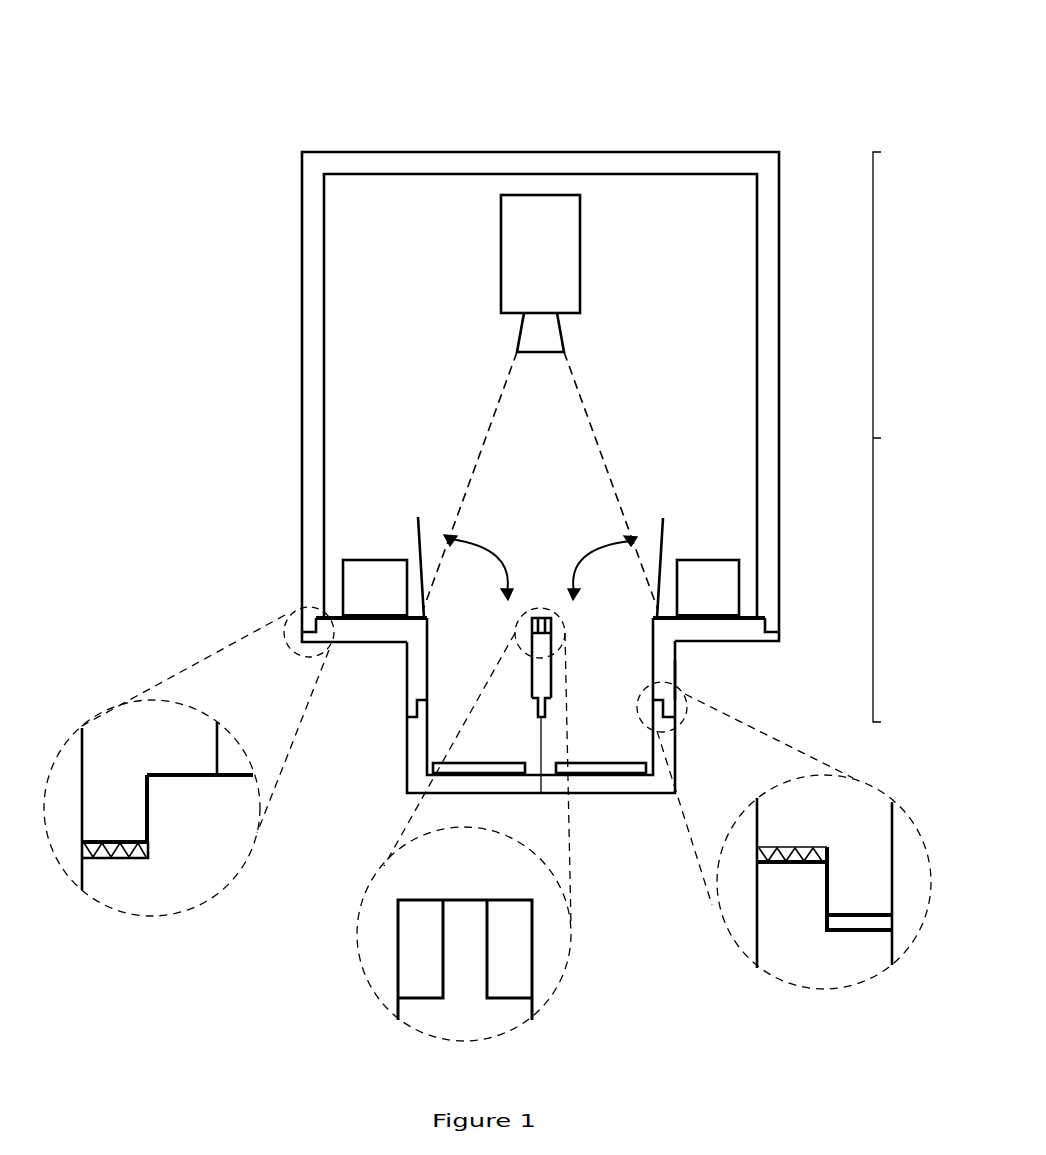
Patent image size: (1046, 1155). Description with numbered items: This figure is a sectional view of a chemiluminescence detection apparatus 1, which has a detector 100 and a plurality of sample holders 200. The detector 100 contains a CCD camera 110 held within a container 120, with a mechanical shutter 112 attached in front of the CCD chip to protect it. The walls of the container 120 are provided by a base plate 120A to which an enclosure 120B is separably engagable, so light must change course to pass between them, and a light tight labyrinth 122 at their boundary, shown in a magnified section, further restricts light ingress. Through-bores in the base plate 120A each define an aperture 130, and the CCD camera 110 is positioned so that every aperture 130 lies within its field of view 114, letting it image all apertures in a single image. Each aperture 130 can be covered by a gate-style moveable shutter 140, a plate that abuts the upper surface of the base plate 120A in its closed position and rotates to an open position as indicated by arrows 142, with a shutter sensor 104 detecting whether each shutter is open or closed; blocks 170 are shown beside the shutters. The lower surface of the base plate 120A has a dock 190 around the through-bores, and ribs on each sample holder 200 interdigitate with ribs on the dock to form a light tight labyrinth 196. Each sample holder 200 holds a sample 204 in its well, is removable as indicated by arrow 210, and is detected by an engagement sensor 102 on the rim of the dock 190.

The chemiluminescence detection apparatus 1 is at (253, 82).
The detector 100 is at (895, 437).
The engagement sensor 102 is at (892, 925).
The shutter sensor 104 is at (398, 938).
The CCD camera 110 is at (558, 193).
The mechanical shutter 112 is at (517, 342).
The field of view 114 is at (612, 440).
The container 120 is at (302, 304).
The base plate 120A is at (230, 776).
The enclosure 120B is at (82, 808).
The light tight labyrinth 122 is at (88, 849).
The aperture 130 is at (605, 634).
The moveable shutter 140 is at (418, 527).
The arrows 142 is at (592, 560).
The actuator block 170 is at (343, 578).
The dock 190 is at (678, 668).
The light tight labyrinth 196 is at (762, 853).
The sample holder 200 is at (407, 723).
The sample 204 is at (580, 764).
The arrow 210 is at (389, 777).